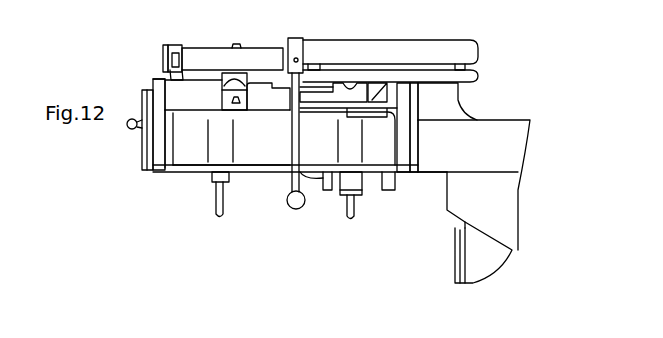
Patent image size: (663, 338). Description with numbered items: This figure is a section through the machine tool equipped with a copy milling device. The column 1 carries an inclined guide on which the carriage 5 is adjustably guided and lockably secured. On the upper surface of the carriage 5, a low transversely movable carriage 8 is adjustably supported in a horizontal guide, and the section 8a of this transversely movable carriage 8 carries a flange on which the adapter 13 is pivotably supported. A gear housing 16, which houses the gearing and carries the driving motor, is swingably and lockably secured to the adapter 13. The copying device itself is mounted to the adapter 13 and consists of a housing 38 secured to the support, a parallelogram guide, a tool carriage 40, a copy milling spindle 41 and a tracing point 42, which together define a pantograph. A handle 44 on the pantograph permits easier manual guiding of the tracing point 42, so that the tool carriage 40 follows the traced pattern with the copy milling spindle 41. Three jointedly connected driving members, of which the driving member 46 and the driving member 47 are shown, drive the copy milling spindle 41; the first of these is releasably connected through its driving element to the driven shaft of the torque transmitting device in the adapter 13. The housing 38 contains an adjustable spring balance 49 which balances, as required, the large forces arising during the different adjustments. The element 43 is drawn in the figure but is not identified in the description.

The guide bar 43 is at (205, 56).
The housing 38 is at (172, 85).
The adjustable spring balance 49 is at (138, 107).
The tool carriage 40 is at (193, 150).
The tracing point 42 is at (212, 187).
The handle 44 is at (285, 198).
The driving member 46 is at (463, 52).
The driving member 47 is at (477, 77).
The section of the transversely movable carriage 8a is at (447, 102).
The adapter 13 is at (383, 170).
The gear housing 16 is at (325, 175).
The copy milling spindle 41 is at (355, 200).
The transversely movable carriage 8 is at (503, 137).
The carriage 5 is at (502, 205).
The column 1 is at (483, 265).